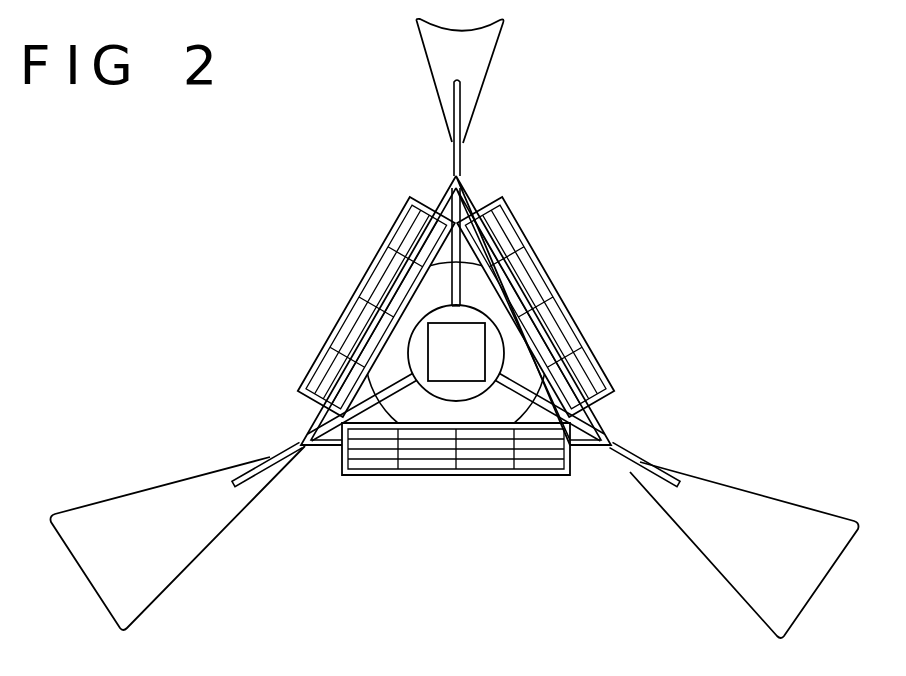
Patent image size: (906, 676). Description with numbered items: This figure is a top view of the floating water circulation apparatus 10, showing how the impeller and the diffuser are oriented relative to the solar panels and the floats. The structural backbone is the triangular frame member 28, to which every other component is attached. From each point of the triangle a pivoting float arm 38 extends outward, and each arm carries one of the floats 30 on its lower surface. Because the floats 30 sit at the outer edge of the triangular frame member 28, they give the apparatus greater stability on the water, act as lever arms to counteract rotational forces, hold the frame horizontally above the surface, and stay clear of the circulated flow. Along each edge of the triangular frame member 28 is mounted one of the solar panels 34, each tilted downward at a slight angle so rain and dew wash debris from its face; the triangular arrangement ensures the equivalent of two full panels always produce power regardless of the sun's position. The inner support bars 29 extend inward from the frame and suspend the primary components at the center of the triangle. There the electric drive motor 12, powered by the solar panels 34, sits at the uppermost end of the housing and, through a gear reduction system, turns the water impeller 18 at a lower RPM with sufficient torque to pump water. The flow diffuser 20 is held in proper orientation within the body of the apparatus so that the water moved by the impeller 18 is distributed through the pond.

The floating water circulation apparatus 10 is at (275, 240).
The electric drive motor 12 is at (443, 338).
The water impeller 18 is at (453, 312).
The flow diffuser 20 is at (395, 358).
The triangular frame member 28 is at (445, 182).
The inner support bars 29 is at (395, 475).
The floats 30 is at (445, 57).
The solar panels 34 is at (356, 289).
The pivoting float arms 38 is at (467, 155).